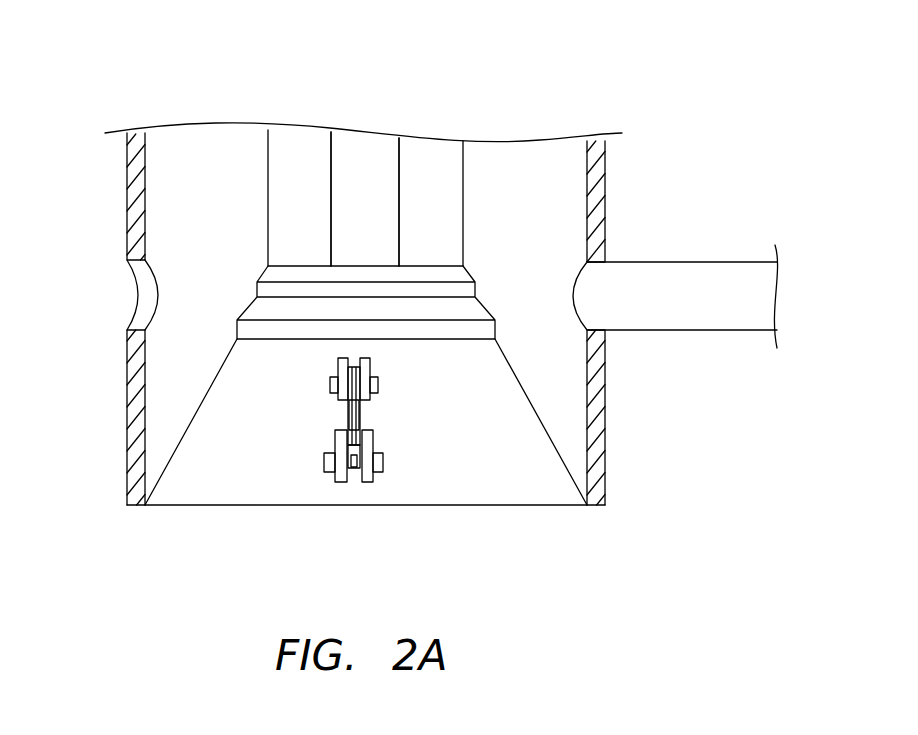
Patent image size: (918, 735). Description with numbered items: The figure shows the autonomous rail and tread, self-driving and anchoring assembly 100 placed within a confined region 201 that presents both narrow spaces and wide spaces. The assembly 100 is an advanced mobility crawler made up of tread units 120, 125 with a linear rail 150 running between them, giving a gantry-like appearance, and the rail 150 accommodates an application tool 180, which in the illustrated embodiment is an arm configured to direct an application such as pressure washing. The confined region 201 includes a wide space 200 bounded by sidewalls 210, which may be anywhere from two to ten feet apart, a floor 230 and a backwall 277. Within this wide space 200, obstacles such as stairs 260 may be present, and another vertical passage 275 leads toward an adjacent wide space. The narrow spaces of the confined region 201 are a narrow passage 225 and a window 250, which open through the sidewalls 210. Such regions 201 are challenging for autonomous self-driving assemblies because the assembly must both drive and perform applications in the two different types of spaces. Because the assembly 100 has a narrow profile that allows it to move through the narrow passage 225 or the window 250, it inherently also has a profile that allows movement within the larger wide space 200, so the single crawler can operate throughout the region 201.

The confined region 201 is at (536, 92).
The wide space 200 is at (294, 157).
The sidewalls 210 is at (227, 213).
The vertical passage 275 is at (388, 213).
The backwall 277 is at (453, 182).
The stairs 260 is at (413, 275).
The window 250 is at (128, 293).
The narrow passage 225 is at (687, 311).
The floor 230 is at (541, 491).
The autonomous rail and tread, self-driving and anchoring assembly 100 is at (377, 412).
The tread unit 125 is at (338, 366).
The application tool 180 is at (345, 415).
The linear rail 150 is at (363, 417).
The tread unit 120 is at (392, 445).